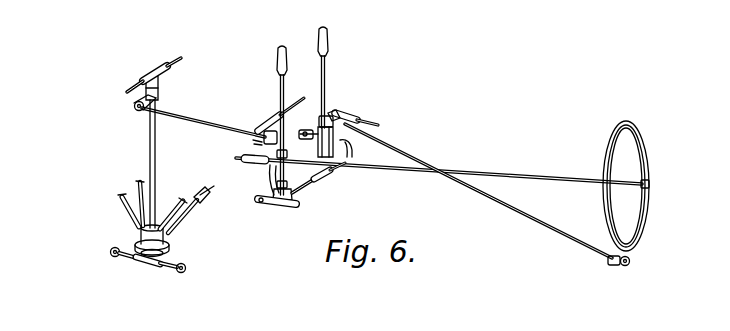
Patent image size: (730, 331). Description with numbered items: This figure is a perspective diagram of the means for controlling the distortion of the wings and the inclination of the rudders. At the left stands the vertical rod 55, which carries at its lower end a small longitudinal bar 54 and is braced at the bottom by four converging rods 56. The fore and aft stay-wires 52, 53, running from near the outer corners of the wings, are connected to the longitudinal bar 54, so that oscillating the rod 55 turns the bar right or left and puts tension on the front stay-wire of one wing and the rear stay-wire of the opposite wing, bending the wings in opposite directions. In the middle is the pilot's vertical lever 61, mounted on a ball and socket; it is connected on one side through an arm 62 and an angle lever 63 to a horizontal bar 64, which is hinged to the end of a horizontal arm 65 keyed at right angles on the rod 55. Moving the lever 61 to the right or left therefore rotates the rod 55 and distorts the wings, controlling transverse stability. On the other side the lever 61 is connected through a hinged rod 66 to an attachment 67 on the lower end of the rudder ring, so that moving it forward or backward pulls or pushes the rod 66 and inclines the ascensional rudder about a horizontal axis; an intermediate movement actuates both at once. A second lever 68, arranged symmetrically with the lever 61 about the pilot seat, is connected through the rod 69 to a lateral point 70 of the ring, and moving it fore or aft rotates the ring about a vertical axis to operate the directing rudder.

The fore stay-wire 52 is at (180, 140).
The aft stay-wire 53 is at (240, 203).
The longitudinal bar 54 is at (190, 245).
The rod 55 is at (151, 153).
The converging rods 56 is at (210, 204).
The vertical lever 61 is at (326, 68).
The arm 62 is at (331, 114).
The angle lever 63 is at (305, 129).
The horizontal bar 64 is at (213, 125).
The horizontal arm 65 is at (133, 104).
The rod 66 is at (548, 223).
The attachment 67 is at (630, 262).
The lever 68 is at (279, 103).
The rod 69 is at (413, 165).
The lateral point 70 is at (649, 184).